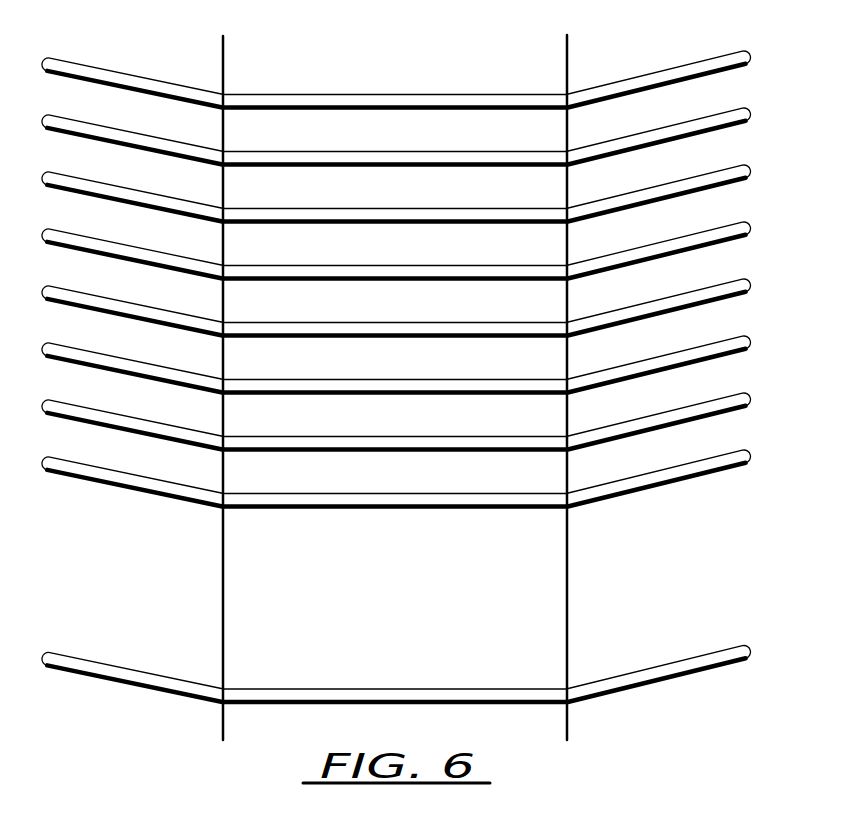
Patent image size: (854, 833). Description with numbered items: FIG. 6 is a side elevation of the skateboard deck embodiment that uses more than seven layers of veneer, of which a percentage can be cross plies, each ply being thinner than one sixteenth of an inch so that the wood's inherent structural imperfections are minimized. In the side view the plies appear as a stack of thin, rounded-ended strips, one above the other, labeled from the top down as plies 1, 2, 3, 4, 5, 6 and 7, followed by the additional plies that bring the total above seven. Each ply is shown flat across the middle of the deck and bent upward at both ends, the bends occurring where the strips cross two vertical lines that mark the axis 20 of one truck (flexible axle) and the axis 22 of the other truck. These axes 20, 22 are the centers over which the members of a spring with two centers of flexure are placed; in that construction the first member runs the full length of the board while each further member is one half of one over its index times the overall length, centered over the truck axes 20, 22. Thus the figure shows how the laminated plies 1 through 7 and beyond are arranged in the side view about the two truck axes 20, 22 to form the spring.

The first lead/wire of the array 1 is at (751, 58).
The second lead/wire 2 is at (751, 116).
The third lead/wire 3 is at (751, 172).
The fourth lead/wire 4 is at (751, 230).
The fifth lead/wire 5 is at (751, 286).
The sixth lead/wire 6 is at (751, 344).
The seventh lead/wire 7 is at (751, 400).
The truck axis 20 is at (223, 47).
The truck axis 22 is at (567, 46).